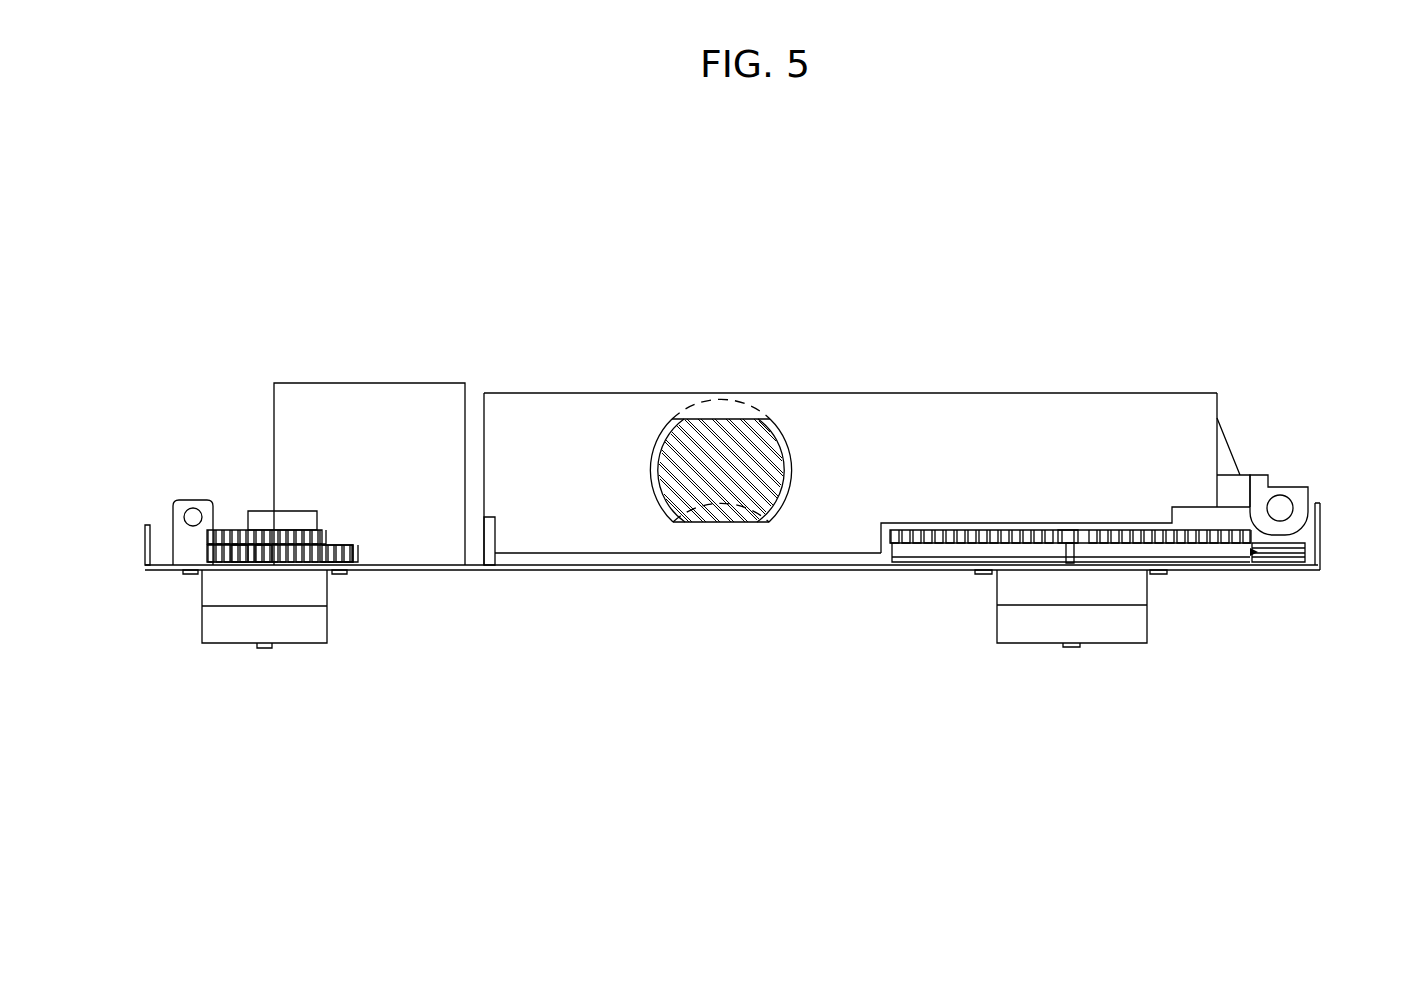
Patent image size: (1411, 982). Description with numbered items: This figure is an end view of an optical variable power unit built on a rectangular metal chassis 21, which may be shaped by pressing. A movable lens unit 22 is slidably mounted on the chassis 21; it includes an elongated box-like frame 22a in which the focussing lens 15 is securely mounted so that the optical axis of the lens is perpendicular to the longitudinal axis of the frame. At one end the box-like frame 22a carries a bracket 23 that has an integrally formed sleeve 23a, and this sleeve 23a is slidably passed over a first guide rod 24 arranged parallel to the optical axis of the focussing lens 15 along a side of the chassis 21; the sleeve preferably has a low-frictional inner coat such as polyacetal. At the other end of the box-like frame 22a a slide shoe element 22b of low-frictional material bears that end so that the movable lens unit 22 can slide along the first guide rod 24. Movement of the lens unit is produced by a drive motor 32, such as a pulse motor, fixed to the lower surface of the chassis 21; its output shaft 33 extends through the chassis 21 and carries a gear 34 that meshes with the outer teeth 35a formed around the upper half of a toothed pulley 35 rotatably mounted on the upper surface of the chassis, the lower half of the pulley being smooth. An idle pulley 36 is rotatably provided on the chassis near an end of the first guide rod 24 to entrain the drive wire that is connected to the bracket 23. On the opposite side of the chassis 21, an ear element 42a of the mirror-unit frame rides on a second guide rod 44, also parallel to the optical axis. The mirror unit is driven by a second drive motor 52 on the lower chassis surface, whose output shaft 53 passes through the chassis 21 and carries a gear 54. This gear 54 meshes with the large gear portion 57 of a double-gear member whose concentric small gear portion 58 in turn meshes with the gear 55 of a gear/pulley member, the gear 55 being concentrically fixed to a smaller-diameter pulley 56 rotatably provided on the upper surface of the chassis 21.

The focussing lens 15 is at (723, 435).
The chassis 21 is at (698, 568).
The movable lens unit 22 is at (565, 393).
The box-like frame 22a is at (852, 415).
The slide shoe element 22b is at (490, 545).
The bracket 23 is at (1240, 480).
The sleeve 23a is at (1303, 495).
The first guide rod 24 is at (1282, 508).
The drive motor 32 is at (1033, 625).
The output shaft 33 is at (1070, 548).
The gear 34 is at (1068, 540).
The toothed pulley 35 is at (910, 565).
The outer teeth 35a is at (975, 530).
The idle pulley 36 is at (1310, 546).
The ear element 42a is at (147, 528).
The second guide rod 44 is at (193, 513).
The drive motor 52 is at (222, 625).
The output shaft 53 is at (265, 550).
The gear 54 is at (265, 535).
The gear 55 is at (355, 560).
The pulley 56 is at (270, 520).
The large gear portion 57 is at (328, 532).
The small gear portion 58 is at (245, 555).